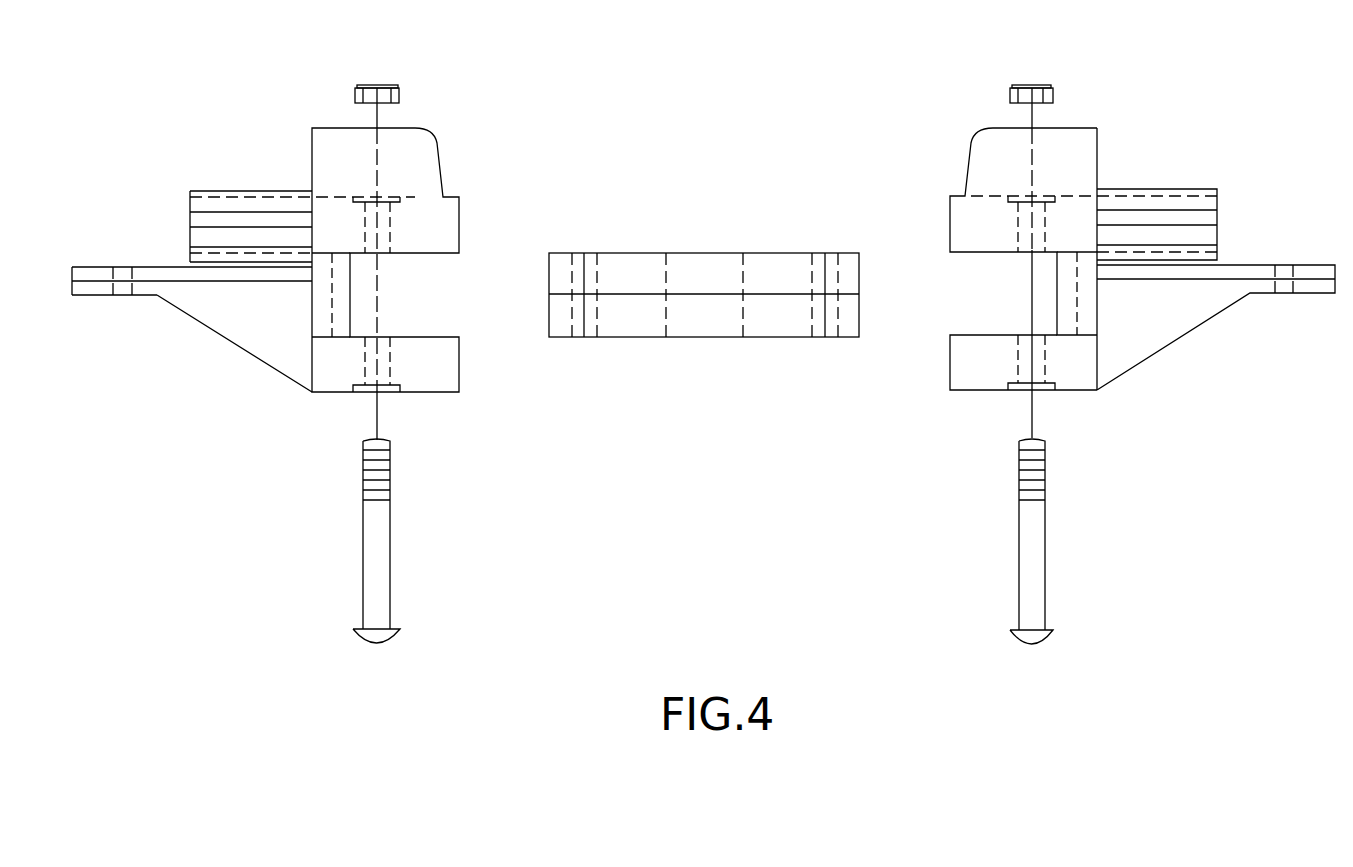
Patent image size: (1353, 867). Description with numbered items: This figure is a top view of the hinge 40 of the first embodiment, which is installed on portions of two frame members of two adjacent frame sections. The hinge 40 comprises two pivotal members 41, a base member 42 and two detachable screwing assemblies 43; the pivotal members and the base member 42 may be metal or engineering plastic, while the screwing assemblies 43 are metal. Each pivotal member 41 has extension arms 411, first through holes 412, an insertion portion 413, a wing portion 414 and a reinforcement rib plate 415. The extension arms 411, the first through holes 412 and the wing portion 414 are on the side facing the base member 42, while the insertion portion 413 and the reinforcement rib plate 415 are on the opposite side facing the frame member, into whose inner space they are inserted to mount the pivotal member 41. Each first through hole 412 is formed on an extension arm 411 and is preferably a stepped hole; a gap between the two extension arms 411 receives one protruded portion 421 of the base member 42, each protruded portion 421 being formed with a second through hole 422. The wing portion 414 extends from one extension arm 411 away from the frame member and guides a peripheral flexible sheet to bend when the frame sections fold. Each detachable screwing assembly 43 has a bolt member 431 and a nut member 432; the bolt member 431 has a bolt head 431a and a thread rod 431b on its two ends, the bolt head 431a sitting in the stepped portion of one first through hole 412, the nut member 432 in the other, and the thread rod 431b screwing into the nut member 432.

The hinge 40 is at (788, 137).
The pivotal member 41 is at (252, 363).
The base member 42 is at (696, 238).
The detachable screwing assembly 43 is at (1002, 557).
The extension arm 411 is at (980, 385).
The first through hole 412 is at (1017, 358).
The insertion portion 413 is at (1182, 193).
The wing portion 414 is at (1073, 130).
The reinforcement rib plate 415 is at (1227, 302).
The protruded portion 421 is at (848, 260).
The second through hole 422 is at (598, 322).
The bolt member 431 is at (1040, 548).
The bolt head 431a is at (1050, 635).
The thread rod 431b is at (1043, 480).
The nut member 432 is at (1010, 89).